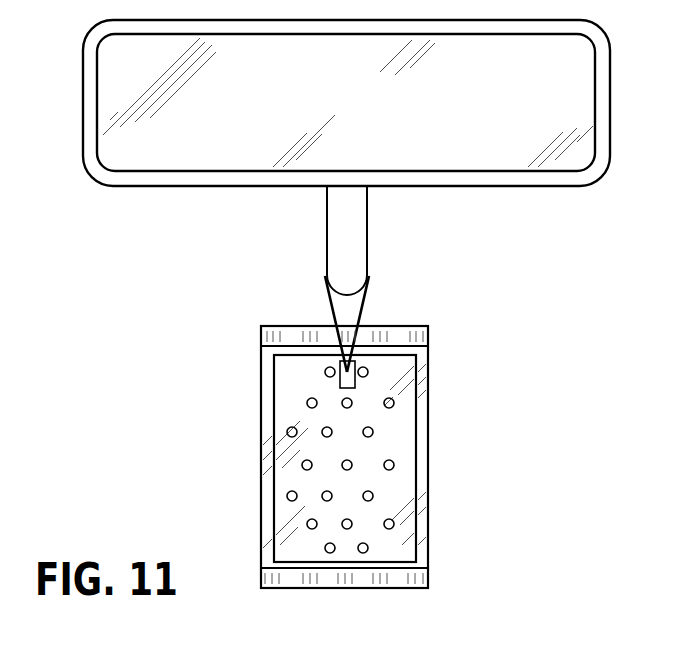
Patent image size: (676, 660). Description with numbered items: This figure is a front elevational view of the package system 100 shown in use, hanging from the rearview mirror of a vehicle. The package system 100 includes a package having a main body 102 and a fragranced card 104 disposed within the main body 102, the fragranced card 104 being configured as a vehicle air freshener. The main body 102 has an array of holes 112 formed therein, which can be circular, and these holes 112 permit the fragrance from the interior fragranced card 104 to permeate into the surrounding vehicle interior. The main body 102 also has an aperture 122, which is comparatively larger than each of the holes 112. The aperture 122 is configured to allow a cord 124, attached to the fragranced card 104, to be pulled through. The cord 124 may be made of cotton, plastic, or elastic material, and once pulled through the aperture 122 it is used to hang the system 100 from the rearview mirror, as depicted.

The package system 100 is at (348, 435).
The main body 102 is at (428, 502).
The fragranced card 104 is at (288, 375).
The holes 112 is at (373, 432).
The aperture 122 is at (350, 367).
The cord 124 is at (330, 303).